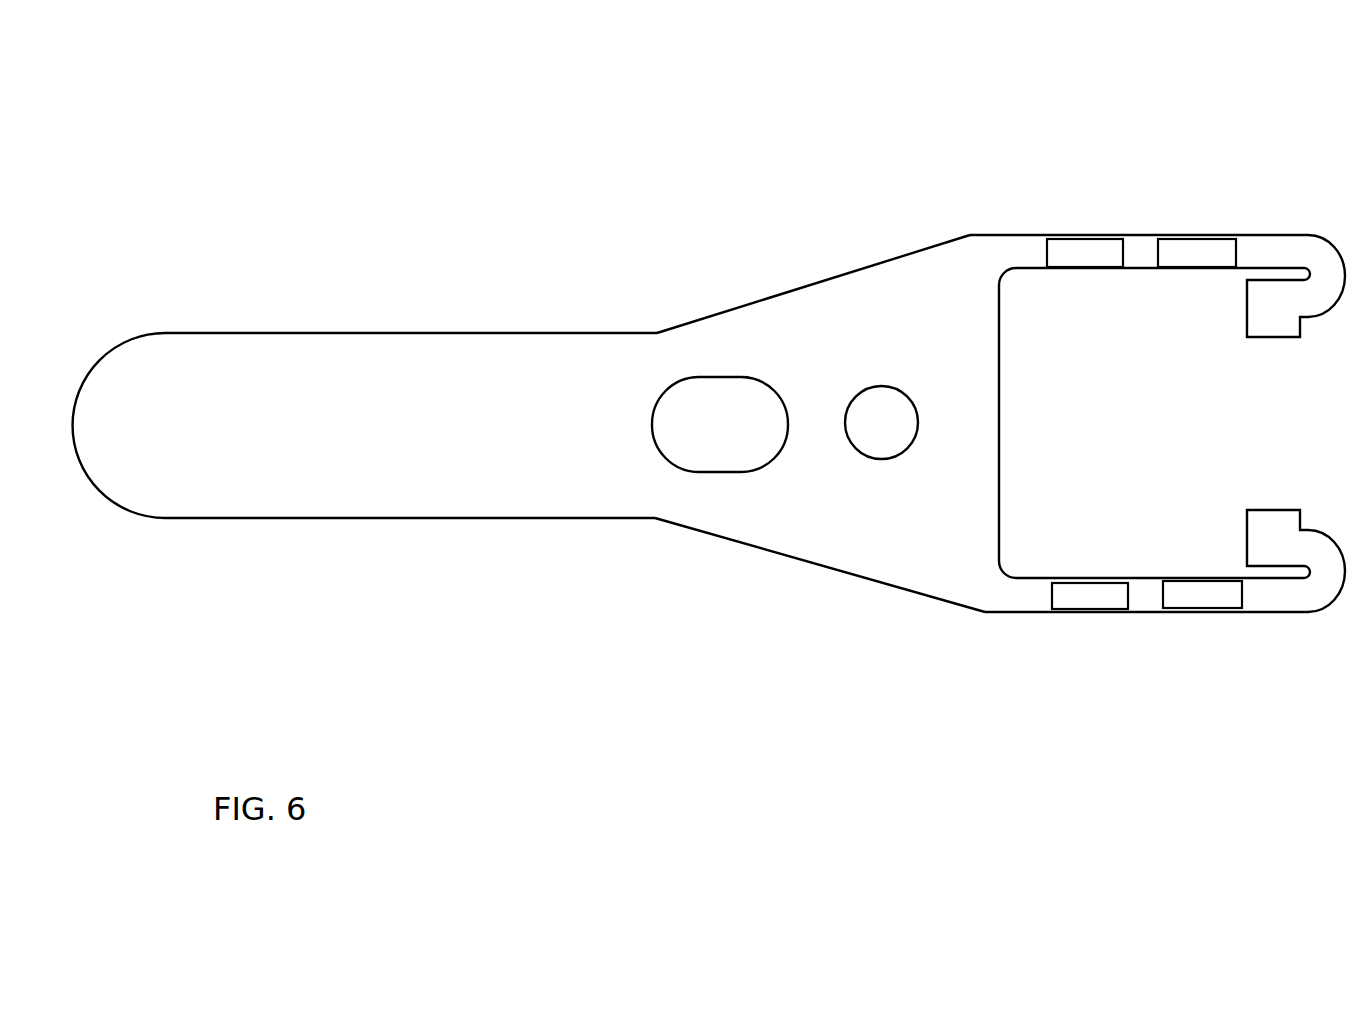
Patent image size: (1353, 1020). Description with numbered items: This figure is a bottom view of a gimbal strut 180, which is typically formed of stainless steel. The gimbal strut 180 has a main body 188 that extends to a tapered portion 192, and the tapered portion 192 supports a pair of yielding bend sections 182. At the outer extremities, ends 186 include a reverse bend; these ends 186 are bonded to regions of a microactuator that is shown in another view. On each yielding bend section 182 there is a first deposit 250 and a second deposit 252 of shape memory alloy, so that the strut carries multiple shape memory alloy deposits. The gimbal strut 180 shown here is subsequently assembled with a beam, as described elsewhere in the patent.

The gimbal strut 180 is at (452, 133).
The yielding bend sections 182 is at (1157, 423).
The ends 186 is at (1273, 305).
The main body 188 is at (393, 333).
The tapered portion 192 is at (838, 275).
The first deposit 250 is at (1077, 257).
The second deposit 252 is at (1170, 257).